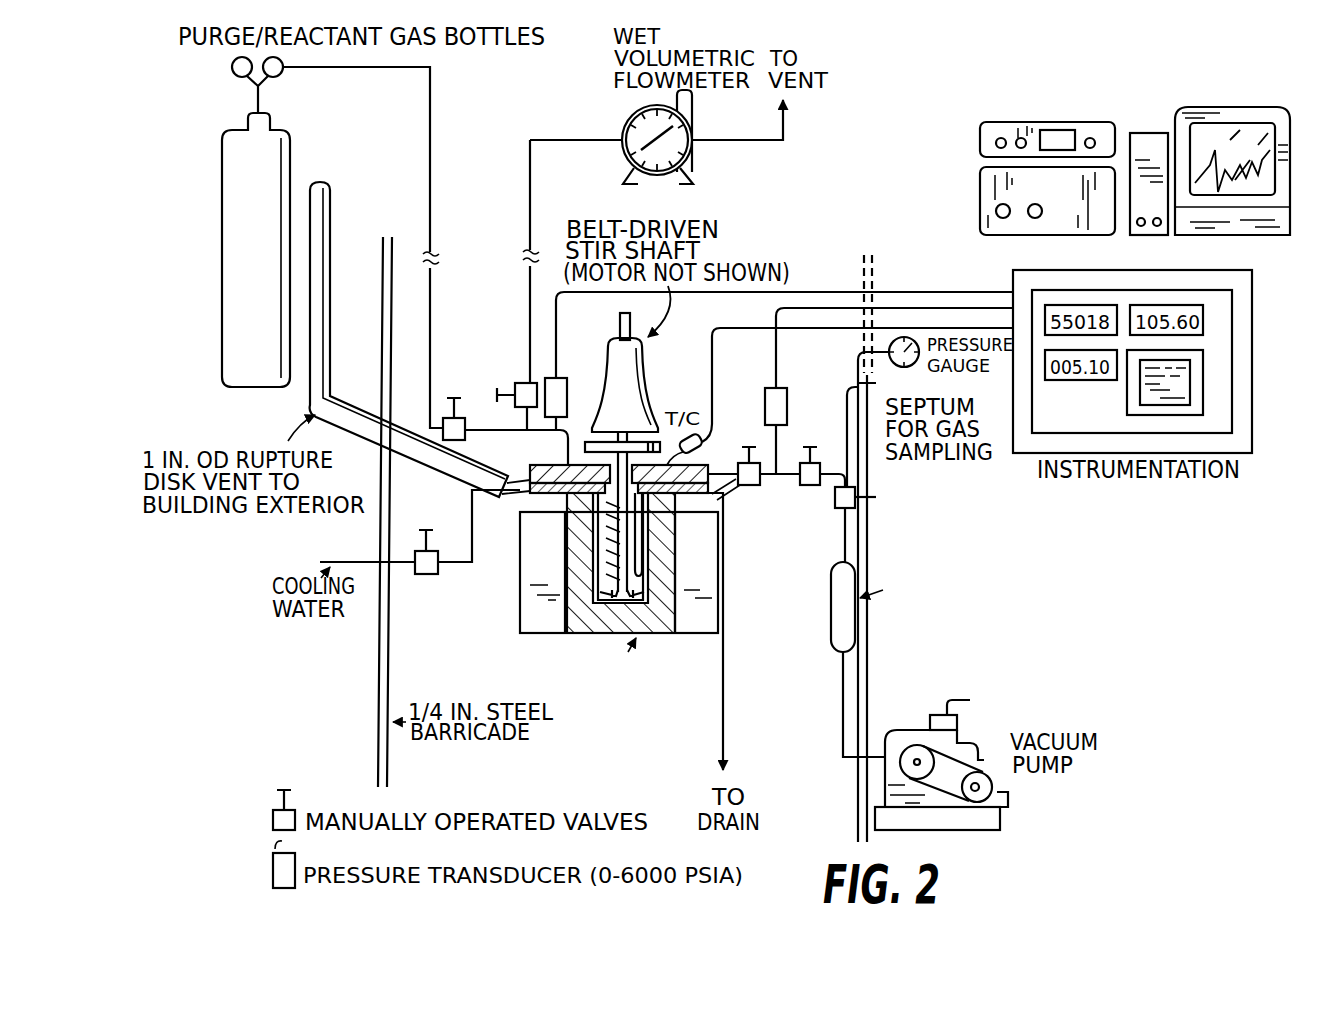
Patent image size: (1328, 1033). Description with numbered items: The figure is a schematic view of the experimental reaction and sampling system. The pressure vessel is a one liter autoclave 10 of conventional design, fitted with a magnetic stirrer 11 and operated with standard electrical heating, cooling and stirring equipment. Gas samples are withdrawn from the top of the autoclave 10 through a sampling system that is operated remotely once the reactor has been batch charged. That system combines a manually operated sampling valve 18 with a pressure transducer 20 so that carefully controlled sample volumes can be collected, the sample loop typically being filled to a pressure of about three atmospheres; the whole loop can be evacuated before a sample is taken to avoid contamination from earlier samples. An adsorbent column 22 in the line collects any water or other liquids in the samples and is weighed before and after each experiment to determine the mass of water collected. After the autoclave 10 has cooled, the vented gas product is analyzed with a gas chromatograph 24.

The autoclave 10 is at (520, 596).
The magnetic stirrer 11 is at (620, 525).
The manually operated sampling valve 18 is at (745, 488).
The pressure transducer 20 is at (787, 407).
The adsorbent column 22 is at (856, 636).
The gas chromatograph 24 is at (968, 137).